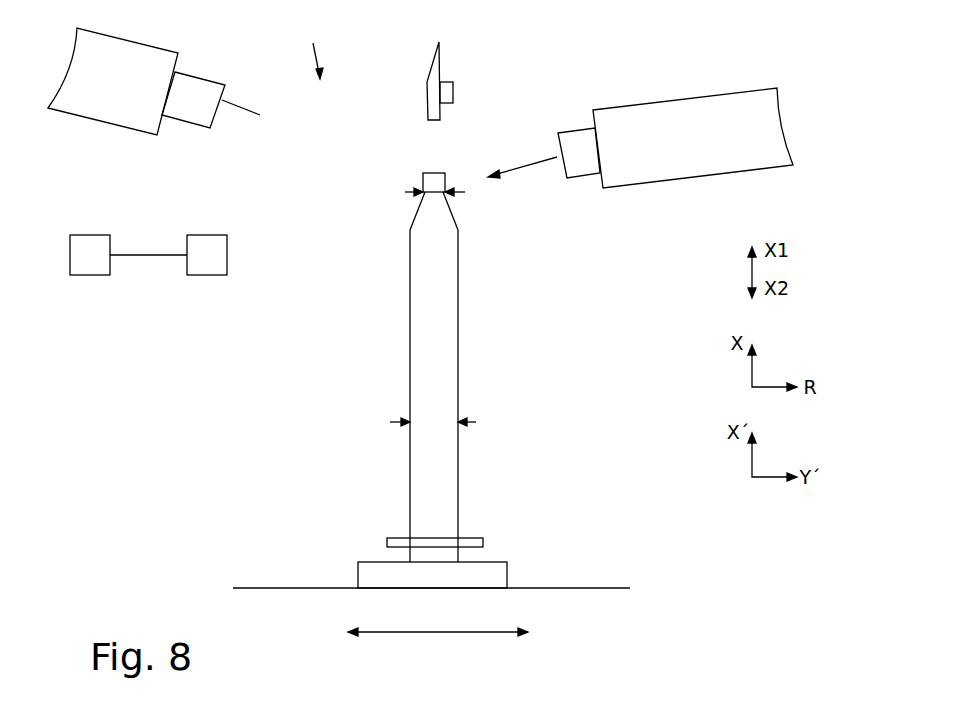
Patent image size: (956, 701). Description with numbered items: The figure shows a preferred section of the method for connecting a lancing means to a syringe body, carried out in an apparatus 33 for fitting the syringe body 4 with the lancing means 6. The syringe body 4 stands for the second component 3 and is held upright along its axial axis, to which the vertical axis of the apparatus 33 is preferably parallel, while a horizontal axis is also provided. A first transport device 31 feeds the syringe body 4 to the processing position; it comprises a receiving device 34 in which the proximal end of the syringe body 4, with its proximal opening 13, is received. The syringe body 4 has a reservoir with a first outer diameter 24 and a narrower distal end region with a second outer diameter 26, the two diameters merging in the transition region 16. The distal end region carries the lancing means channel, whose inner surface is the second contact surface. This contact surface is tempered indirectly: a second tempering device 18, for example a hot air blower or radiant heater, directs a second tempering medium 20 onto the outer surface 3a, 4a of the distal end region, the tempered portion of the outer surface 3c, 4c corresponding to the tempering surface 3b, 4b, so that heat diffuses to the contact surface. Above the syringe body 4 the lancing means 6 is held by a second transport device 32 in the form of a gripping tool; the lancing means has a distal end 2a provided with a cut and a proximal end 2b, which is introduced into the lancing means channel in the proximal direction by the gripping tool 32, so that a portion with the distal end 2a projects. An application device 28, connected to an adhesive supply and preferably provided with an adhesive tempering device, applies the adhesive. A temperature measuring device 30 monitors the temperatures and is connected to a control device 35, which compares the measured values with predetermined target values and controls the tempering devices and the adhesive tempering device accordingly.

The application device 28 is at (147, 43).
The apparatus 33 is at (305, 51).
The distal end 2a is at (428, 97).
The lancing means 6 is at (425, 90).
The second transport device 32 is at (455, 90).
The proximal end 2b is at (431, 98).
The second tempering device 18 is at (715, 97).
The second tempering medium 20 is at (525, 163).
The second outer diameter 26 is at (408, 190).
The transition region 16 is at (503, 211).
The outer surface of the distal end region 3a is at (524, 211).
The tempering surface 3b is at (524, 211).
The portion of the outer surface of the distal end region 3c is at (524, 211).
The outer surface of the distal end region 4a is at (524, 211).
The tempering surface 4b is at (524, 211).
The portion of the outer surface of the distal end region 4c is at (457, 213).
The second component 3 is at (450, 396).
The syringe body 4 is at (450, 396).
The first outer diameter 24 is at (475, 422).
The proximal opening 13 is at (373, 548).
The first transport device 31 is at (497, 567).
The receiving device 34 is at (445, 563).
The control device 35 is at (87, 277).
The temperature measuring device 30 is at (208, 277).